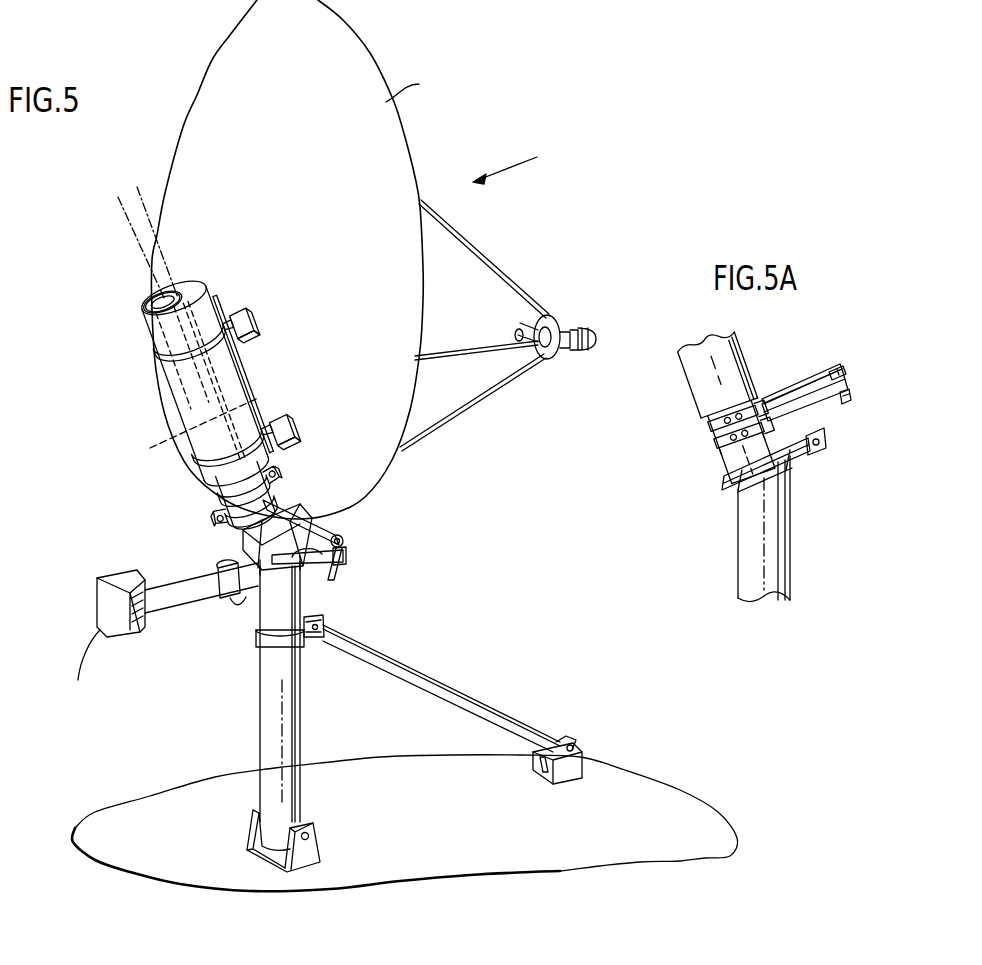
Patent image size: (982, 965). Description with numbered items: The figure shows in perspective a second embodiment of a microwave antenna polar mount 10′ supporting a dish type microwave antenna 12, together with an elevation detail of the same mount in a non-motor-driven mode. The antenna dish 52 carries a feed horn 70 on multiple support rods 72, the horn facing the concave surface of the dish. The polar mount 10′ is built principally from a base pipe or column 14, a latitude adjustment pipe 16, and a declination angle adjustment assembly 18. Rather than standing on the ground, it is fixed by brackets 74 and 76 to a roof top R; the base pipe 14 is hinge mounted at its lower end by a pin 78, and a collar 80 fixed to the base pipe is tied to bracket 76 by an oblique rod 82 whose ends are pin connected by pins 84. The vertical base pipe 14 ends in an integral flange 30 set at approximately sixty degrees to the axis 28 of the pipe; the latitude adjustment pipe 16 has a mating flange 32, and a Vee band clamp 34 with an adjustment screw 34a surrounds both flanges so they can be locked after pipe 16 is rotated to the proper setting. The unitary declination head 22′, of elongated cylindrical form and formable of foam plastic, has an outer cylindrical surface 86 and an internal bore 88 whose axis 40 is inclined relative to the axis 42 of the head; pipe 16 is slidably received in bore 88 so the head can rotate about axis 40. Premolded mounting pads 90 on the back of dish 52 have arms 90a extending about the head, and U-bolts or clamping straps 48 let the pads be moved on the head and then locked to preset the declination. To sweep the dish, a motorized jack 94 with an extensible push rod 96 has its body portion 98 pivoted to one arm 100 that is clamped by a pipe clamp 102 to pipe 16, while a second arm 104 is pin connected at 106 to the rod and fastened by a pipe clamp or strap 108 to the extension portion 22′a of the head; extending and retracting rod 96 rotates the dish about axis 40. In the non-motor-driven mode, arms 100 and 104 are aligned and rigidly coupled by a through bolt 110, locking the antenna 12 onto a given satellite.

In FIG. 5, the microwave antenna polar mount 10′ is at (99, 370).
In FIG. 5, the dish type microwave antenna 12 is at (415, 133).
In FIG. 5, the base pipe or column 14 is at (300, 742).
In FIG. 5A, the base pipe or column 14 is at (745, 540).
In FIG. 5, the latitude adjustment pipe 16 is at (148, 300).
In FIG. 5A, the latitude adjustment pipe 16 is at (748, 460).
In FIG. 5, the declination angle adjustment assembly 18 is at (172, 404).
In FIG. 5, the declination head 22′ is at (143, 333).
In FIG. 5A, the declination head 22′ is at (738, 352).
In FIG. 5, the extension portion of declination head 22′a is at (215, 503).
In FIG. 5A, the extension portion of declination head 22′a is at (705, 415).
In FIG. 5, the axis of base pipe 28 is at (280, 696).
In FIG. 5A, the integral flange 30 is at (732, 494).
In FIG. 5, the flange 32 is at (296, 578).
In FIG. 5A, the flange 32 is at (722, 480).
In FIG. 5, the Vee band clamp 34 is at (340, 520).
In FIG. 5A, the Vee band clamp 34 is at (808, 466).
In FIG. 5A, the adjustment screw 34a is at (820, 450).
In FIG. 5, the bore axis 40 is at (122, 215).
In FIG. 5, the declination head axis 42 is at (143, 212).
In FIG. 5, the U-bolts or clamping straps 48 is at (158, 354).
In FIG. 5, the microwave antenna dish 52 is at (413, 87).
In FIG. 5, the feed horn 70 is at (578, 352).
In FIG. 5, the support rods 72 is at (505, 283).
In FIG. 5, the bracket 74 is at (313, 850).
In FIG. 5, the bracket 76 is at (582, 766).
In FIG. 5, the pin 78 is at (310, 826).
In FIG. 5, the collar 80 is at (260, 640).
In FIG. 5, the oblique rod 82 is at (402, 676).
In FIG. 5, the pins 84 is at (324, 630).
In FIG. 5, the outer cylindrical surface 86 is at (240, 404).
In FIG. 5, the bore 88 is at (172, 288).
In FIG. 5, the premolded mounting pads 90 is at (258, 339).
In FIG. 5, the arms 90a is at (220, 325).
In FIG. 5, the motorized jack 94 is at (118, 584).
In FIG. 5, the push rod 96 is at (323, 572).
In FIG. 5, the body portion 98 is at (215, 592).
In FIG. 5, the arm 100 is at (257, 552).
In FIG. 5A, the arm 100 is at (815, 412).
In FIG. 5, the pipe clamp 102 is at (232, 514).
In FIG. 5A, the pipe clamp 102 is at (718, 452).
In FIG. 5, the second arm 104 is at (298, 514).
In FIG. 5A, the second arm 104 is at (792, 390).
In FIG. 5, the pin connection 106 is at (344, 546).
In FIG. 5, the pipe clamp or strap 108 is at (275, 492).
In FIG. 5A, the pipe clamp or strap 108 is at (718, 432).
In FIG. 5A, the through bolt 110 is at (843, 360).
In FIG. 5, the roof top R is at (700, 830).